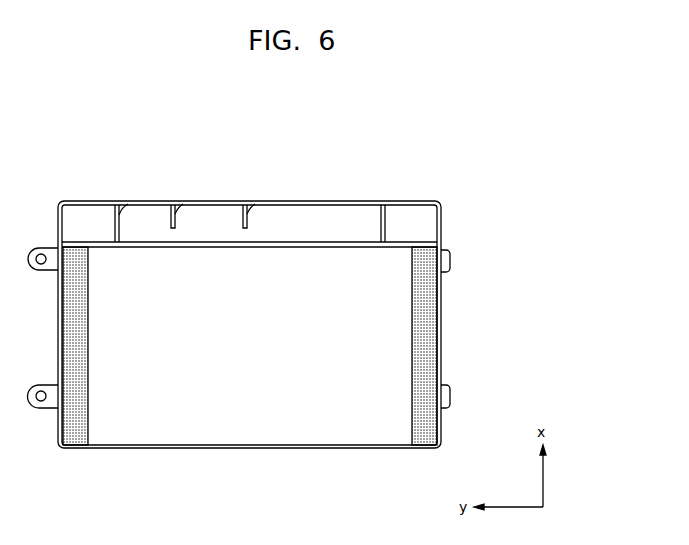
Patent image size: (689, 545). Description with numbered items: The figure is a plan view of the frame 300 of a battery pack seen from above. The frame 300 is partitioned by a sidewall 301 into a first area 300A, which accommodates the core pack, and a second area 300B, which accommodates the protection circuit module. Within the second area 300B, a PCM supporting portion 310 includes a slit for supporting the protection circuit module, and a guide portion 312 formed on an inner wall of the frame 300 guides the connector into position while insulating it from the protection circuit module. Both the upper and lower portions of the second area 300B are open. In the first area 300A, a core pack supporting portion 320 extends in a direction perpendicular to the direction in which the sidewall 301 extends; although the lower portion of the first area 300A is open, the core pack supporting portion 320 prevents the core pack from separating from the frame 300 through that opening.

The frame 300 is at (540, 140).
The first area 300A is at (259, 406).
The second area 300B is at (298, 226).
The sidewall 301 is at (424, 244).
The PCM supporting portion 310 is at (126, 212).
The guide portion 312 is at (180, 220).
The core pack supporting portion 320 is at (88, 367).